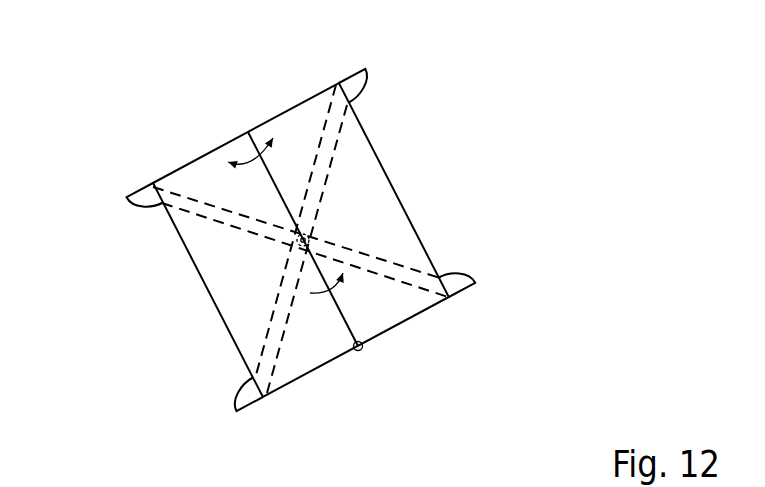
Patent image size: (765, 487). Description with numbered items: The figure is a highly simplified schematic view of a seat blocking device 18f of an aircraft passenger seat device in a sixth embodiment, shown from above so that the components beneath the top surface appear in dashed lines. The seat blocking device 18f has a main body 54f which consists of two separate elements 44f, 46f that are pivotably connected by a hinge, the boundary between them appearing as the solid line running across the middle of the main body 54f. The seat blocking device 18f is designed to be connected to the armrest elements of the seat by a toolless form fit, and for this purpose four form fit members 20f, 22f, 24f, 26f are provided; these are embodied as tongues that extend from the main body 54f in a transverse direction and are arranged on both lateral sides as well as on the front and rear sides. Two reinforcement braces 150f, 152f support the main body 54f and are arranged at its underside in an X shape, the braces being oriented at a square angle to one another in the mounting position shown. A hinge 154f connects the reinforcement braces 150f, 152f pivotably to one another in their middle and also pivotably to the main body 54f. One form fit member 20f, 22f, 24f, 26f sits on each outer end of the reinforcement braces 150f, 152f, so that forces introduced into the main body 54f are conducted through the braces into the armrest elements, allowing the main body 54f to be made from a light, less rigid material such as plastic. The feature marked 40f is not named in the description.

The seat blocking device 18f is at (237, 126).
The element of the main body 46f is at (305, 120).
The element of the main body 44f is at (193, 178).
The form fit member 24f is at (142, 206).
The form fit member 26f is at (360, 91).
The form fit member 22f is at (463, 282).
The form fit member 20f is at (243, 393).
The reinforcement brace 150f is at (325, 182).
The reinforcement brace 152f is at (258, 232).
The hinge 154f is at (312, 240).
The main body 54f is at (428, 334).
The hinge point 40f is at (350, 302).